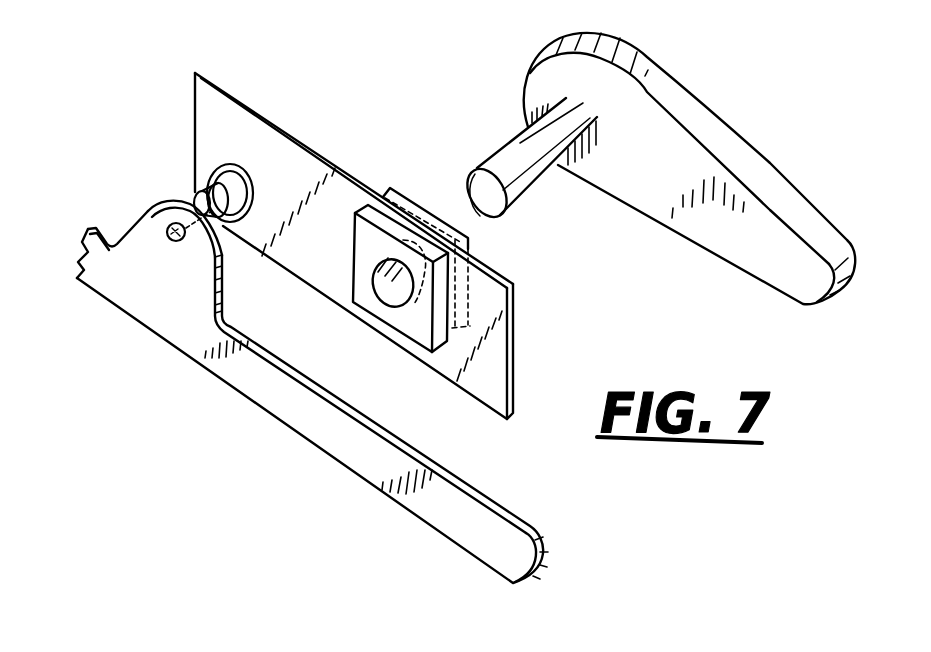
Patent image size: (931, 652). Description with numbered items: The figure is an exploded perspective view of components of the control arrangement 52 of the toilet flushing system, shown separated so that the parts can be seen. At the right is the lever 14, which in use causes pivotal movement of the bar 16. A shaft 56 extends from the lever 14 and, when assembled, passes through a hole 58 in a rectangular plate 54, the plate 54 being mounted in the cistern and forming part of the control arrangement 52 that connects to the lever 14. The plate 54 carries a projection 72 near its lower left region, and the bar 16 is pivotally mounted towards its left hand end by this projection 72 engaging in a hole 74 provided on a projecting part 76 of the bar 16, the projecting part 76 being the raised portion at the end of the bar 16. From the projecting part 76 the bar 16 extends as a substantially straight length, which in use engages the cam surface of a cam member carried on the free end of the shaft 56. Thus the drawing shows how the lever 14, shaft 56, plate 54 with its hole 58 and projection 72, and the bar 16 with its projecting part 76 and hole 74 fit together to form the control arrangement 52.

The lever 14 is at (753, 168).
The bar 16 is at (297, 413).
The control arrangement 52 is at (467, 92).
The rectangular plate 54 is at (299, 240).
The shaft 56 is at (545, 179).
The hole 58 is at (390, 299).
The projection 72 is at (203, 182).
The hole 74 is at (171, 241).
The projecting part 76 is at (149, 224).